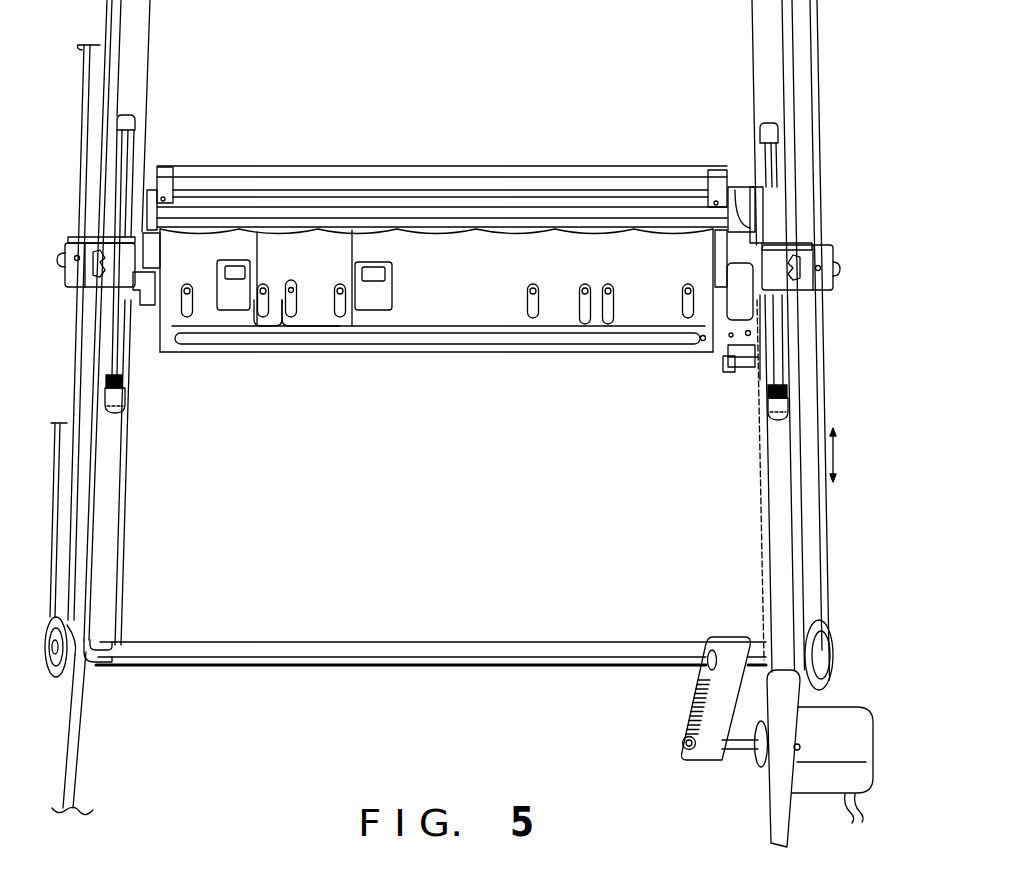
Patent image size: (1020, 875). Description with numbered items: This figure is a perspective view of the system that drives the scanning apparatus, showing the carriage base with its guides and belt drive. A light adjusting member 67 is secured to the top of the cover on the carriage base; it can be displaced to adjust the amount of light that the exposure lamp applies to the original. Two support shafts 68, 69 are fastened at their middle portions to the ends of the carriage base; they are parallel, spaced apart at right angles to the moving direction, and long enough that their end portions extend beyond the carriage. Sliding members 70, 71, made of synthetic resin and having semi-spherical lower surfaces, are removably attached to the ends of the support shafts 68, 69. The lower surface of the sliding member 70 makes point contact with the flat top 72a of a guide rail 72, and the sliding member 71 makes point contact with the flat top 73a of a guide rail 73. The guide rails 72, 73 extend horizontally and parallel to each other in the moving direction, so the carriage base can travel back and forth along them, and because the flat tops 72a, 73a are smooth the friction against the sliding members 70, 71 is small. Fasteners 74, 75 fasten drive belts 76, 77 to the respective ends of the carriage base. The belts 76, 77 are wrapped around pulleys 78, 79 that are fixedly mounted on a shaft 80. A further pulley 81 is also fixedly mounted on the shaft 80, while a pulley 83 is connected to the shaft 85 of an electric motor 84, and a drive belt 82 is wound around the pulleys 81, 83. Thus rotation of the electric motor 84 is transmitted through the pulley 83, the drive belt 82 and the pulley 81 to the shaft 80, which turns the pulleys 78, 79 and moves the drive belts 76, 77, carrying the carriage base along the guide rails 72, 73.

The light adjusting member 67 is at (330, 316).
The support shaft 68 is at (773, 192).
The support shaft 69 is at (122, 191).
The sliding member 70 is at (768, 125).
The sliding member 71 is at (138, 118).
The guide rail 72 is at (781, 676).
The flat top 72a is at (768, 493).
The guide rail 73 is at (110, 660).
The flat top 73a is at (113, 594).
The fastener 74 is at (828, 292).
The fastener 75 is at (57, 285).
The drive belt 76 is at (823, 340).
The drive belt 77 is at (72, 383).
The pulley 78 is at (833, 630).
The pulley 79 is at (48, 672).
The shaft 80 is at (380, 668).
The pulley 81 is at (712, 638).
The drive belt 82 is at (690, 700).
The pulley 83 is at (686, 760).
The electric motor 84 is at (865, 730).
The shaft 85 is at (742, 756).